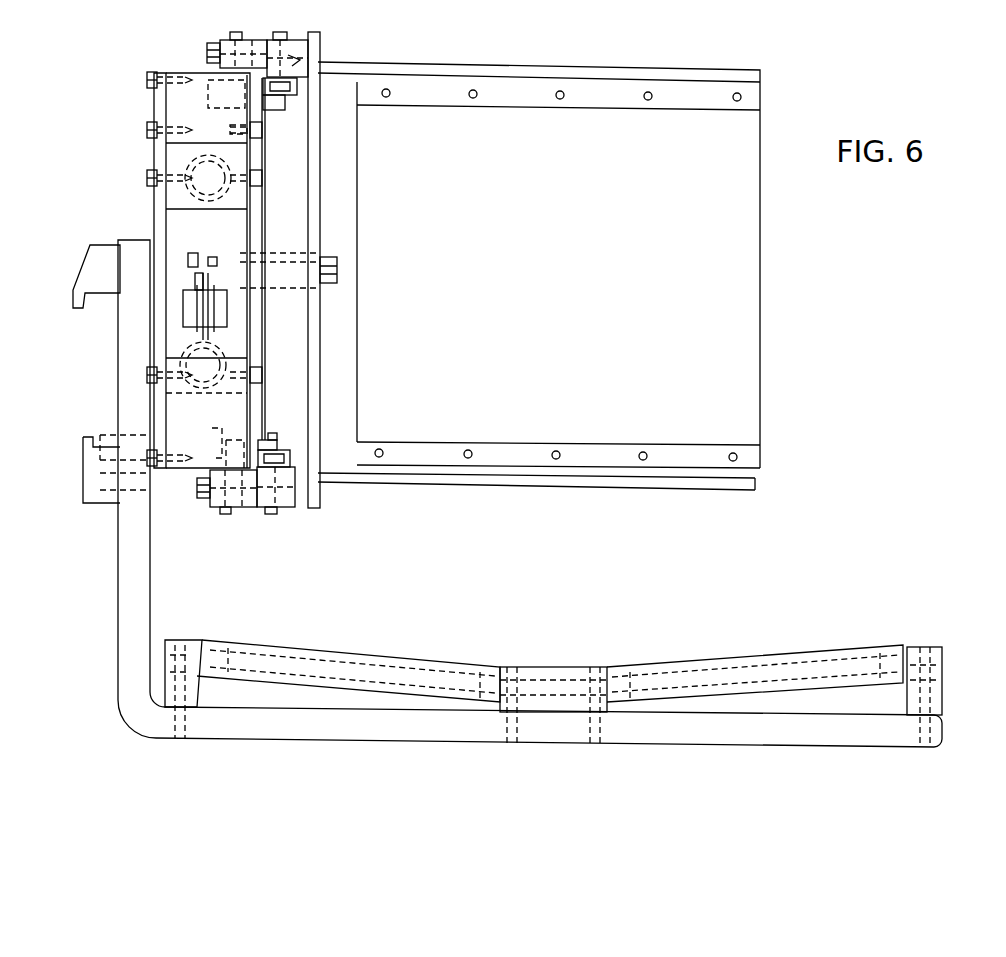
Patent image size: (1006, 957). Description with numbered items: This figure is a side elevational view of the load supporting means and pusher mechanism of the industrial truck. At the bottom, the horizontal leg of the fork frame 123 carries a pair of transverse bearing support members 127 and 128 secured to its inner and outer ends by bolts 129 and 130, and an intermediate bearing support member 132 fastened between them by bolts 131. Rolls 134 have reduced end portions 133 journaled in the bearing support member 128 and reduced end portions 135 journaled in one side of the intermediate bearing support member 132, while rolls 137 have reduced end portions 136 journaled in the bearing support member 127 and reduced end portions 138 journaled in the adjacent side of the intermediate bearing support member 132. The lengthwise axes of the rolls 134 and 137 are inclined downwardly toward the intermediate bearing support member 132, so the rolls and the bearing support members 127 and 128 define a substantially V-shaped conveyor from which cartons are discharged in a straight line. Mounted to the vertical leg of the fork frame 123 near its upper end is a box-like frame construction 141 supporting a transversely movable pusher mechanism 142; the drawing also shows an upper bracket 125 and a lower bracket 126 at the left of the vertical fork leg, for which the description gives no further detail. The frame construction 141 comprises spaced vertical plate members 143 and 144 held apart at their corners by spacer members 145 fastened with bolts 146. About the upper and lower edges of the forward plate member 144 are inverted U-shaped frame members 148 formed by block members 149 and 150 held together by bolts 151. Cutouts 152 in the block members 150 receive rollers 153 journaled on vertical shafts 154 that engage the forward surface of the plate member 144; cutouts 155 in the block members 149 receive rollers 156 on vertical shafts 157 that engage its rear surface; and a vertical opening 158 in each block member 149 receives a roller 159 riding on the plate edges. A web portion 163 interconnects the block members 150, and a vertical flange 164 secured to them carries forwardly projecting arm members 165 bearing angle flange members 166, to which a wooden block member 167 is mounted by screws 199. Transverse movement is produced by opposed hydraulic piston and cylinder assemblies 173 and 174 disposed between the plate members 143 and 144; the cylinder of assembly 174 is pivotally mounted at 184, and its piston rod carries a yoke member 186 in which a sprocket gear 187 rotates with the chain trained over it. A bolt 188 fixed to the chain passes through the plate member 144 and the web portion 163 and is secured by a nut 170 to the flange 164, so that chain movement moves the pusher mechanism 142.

The fork frame 123 is at (770, 738).
The upper mounting bracket 125 is at (97, 263).
The lower mounting bracket 126 is at (90, 462).
The bearing support member 127 is at (170, 682).
The bearing support member 128 is at (936, 705).
The bolts 129 is at (188, 732).
The bolts 130 is at (926, 683).
The bolts 131 is at (515, 745).
The intermediate bearing support member 132 is at (553, 672).
The reduced end portions 133 is at (911, 650).
The rolls 134 is at (775, 660).
The reduced end portions 135 is at (600, 669).
The reduced end portions 136 is at (186, 640).
The rolls 137 is at (320, 660).
The reduced end portions 138 is at (504, 669).
The frame construction 141 is at (118, 230).
The pusher mechanism 142 is at (516, 58).
The plate member 143 is at (156, 205).
The forward plate member 144 is at (253, 228).
The spacer members 145 is at (172, 100).
The bolts 146 is at (150, 82).
The inverted U-shaped frame members 148 is at (310, 74).
The block member 149 is at (234, 38).
The block member 150 is at (293, 40).
The bolts 151 is at (207, 54).
The cutouts 152 is at (297, 87).
The rollers 153 is at (284, 100).
The shaft 154 is at (300, 58).
The cutouts 155 is at (244, 118).
The rollers 156 is at (220, 88).
The shafts 157 is at (230, 35).
The opening 158 is at (258, 38).
The rollers 159 is at (272, 42).
The web portion 163 is at (300, 337).
The flange 164 is at (312, 308).
The arm members 165 is at (715, 76).
The angle flange members 166 is at (696, 100).
The block member 167 is at (738, 240).
The nut 170 is at (342, 272).
The hydraulic piston and cylinder assembly 173 is at (180, 352).
The hydraulic piston and cylinder assembly 174 is at (187, 200).
The pivotal mounting 184 is at (147, 178).
The yoke member 186 is at (222, 280).
The sprocket gear 187 is at (200, 310).
The bolt 188 is at (291, 268).
The screws 199 is at (648, 99).